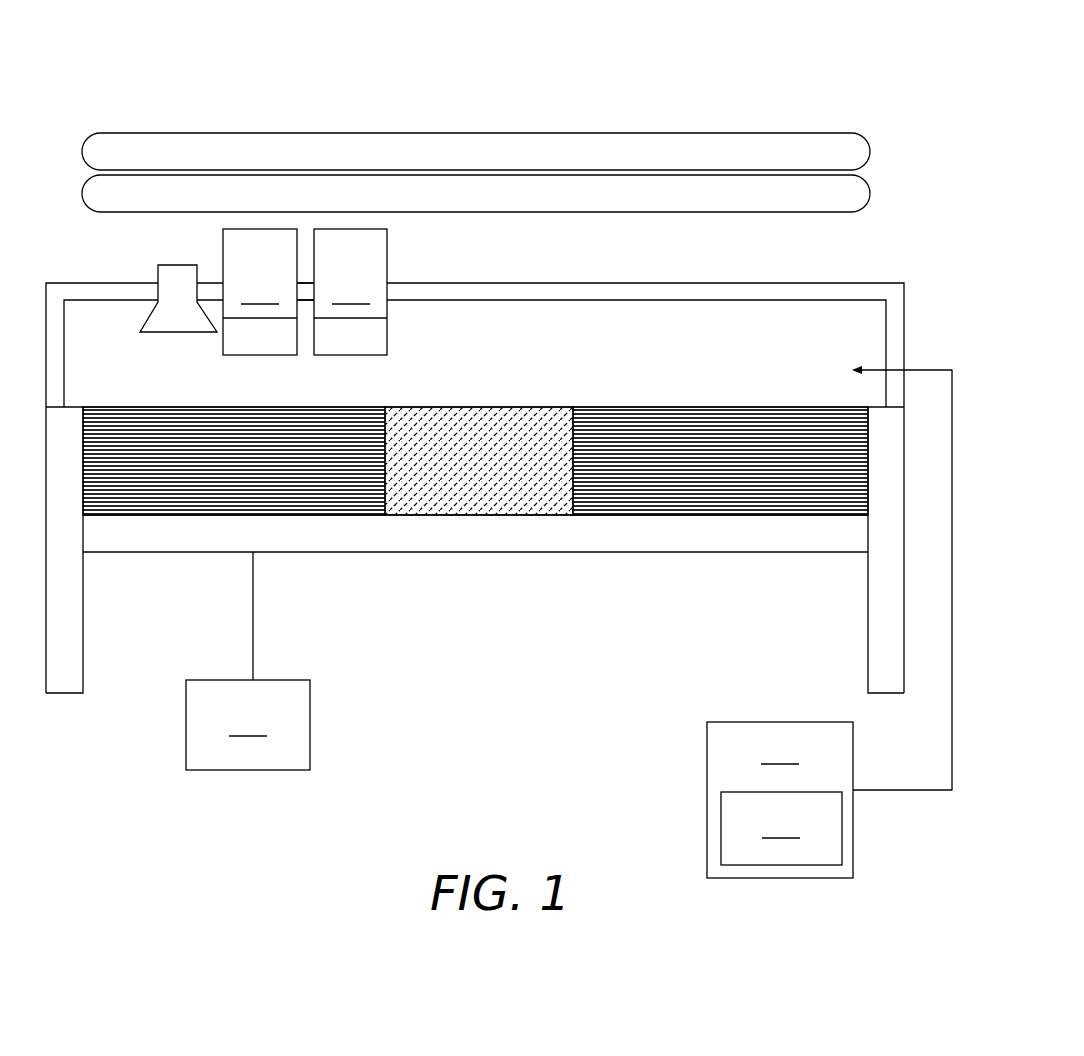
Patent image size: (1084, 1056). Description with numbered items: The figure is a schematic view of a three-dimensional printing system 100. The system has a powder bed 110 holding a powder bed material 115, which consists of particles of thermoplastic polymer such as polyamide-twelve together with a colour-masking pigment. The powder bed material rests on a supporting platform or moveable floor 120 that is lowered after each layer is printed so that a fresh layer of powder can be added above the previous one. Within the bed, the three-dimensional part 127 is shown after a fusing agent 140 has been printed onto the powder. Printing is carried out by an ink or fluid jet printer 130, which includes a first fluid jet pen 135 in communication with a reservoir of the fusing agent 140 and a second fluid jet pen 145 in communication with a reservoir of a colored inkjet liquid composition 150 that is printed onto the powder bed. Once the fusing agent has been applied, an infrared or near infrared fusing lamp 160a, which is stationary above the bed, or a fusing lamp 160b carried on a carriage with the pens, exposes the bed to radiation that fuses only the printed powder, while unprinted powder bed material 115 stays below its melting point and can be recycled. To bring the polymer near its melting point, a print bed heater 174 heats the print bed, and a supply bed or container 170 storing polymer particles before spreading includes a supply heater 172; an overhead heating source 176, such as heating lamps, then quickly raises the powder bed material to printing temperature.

The 3-dimensional printing system 100 is at (499, 452).
The powder bed 110 is at (775, 582).
The powder bed material 115 is at (718, 420).
The supporting platform or moveable floor 120 is at (601, 533).
The 3-dimensional part 127 is at (535, 430).
The ink or fluid jet printer 130 is at (871, 263).
The first ink or fluid jet pen 135 is at (212, 361).
The fusing agent 140 is at (260, 292).
The second fluid jet pen 145 is at (413, 324).
The colored inkjet liquid composition 150 is at (350, 292).
The fusing lamp 160a is at (563, 195).
The fusing lamp 160b is at (165, 283).
The supply bed or container 170 is at (829, 622).
The supply heater 172 is at (781, 828).
The print bed heater 174 is at (248, 661).
The overhead heating source 176 is at (492, 155).